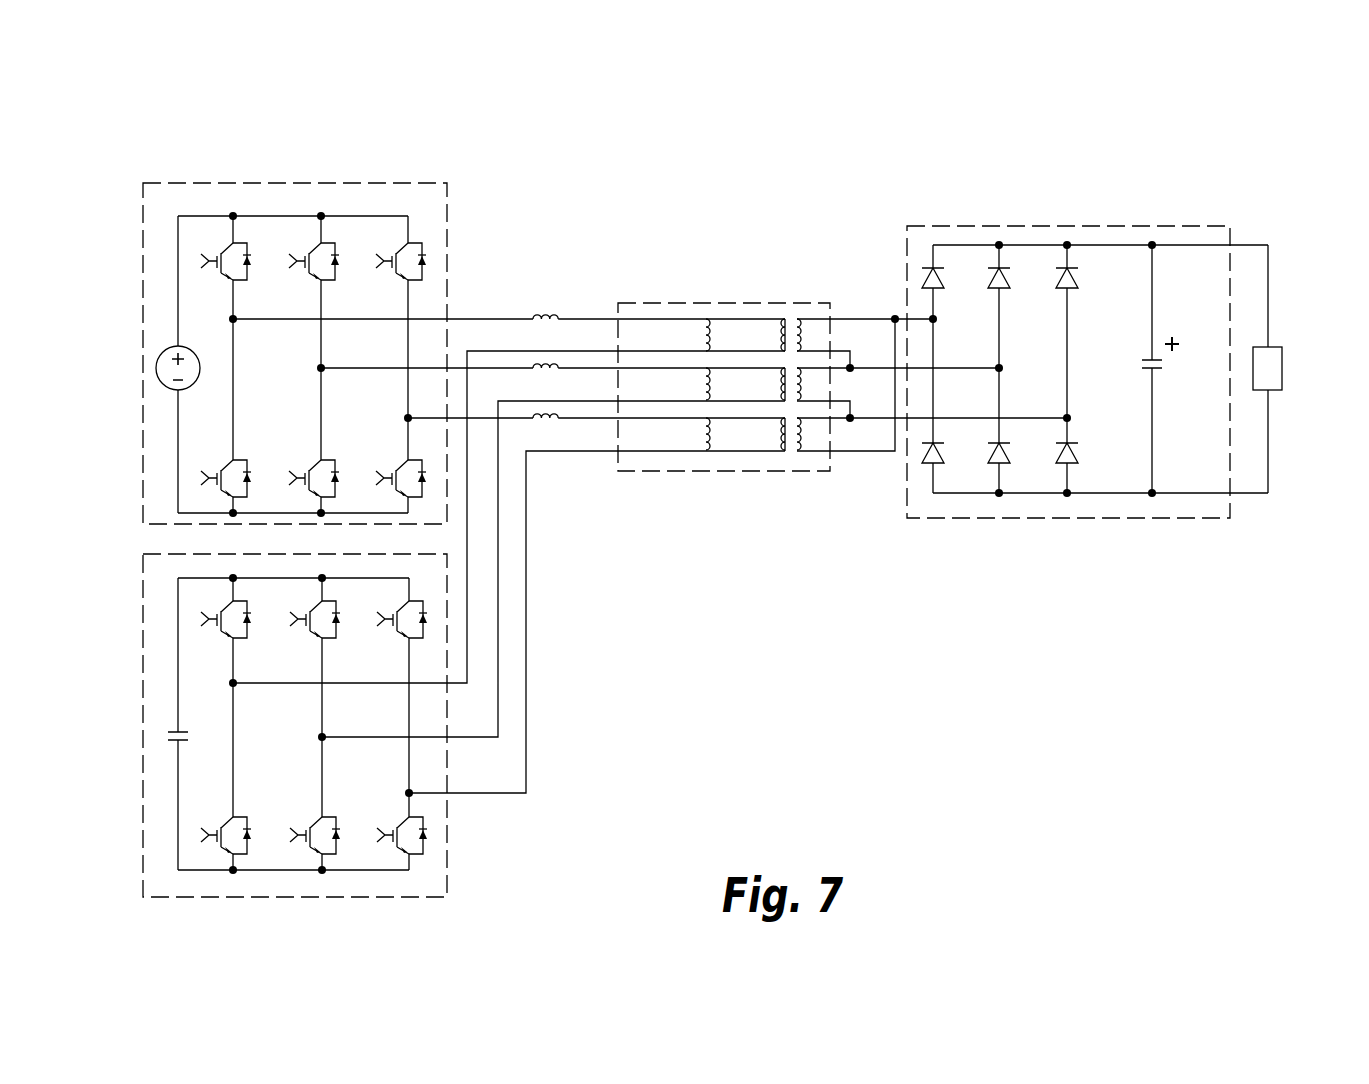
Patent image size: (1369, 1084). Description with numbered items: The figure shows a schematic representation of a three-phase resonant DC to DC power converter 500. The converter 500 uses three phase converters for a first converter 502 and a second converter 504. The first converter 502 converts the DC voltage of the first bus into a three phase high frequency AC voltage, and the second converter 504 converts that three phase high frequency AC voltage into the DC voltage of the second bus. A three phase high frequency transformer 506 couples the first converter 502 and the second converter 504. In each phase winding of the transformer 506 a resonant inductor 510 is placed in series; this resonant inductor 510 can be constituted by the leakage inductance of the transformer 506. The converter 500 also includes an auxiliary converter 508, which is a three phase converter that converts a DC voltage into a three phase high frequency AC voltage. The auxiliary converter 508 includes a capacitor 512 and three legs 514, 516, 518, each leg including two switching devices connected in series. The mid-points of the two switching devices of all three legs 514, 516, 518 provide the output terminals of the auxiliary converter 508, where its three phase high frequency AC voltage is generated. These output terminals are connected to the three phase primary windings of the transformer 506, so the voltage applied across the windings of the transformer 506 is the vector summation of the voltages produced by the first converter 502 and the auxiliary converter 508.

The three-phase resonant DC to DC power converter 500 is at (165, 130).
The first converter 502 is at (144, 183).
The second converter 504 is at (1137, 226).
The three phase high frequency transformer 506 is at (822, 303).
The auxiliary converter 508 is at (143, 586).
The resonant inductor 510 is at (533, 318).
The capacitor 512 is at (178, 730).
The leg 514 is at (233, 793).
The leg 516 is at (322, 772).
The leg 518 is at (409, 763).